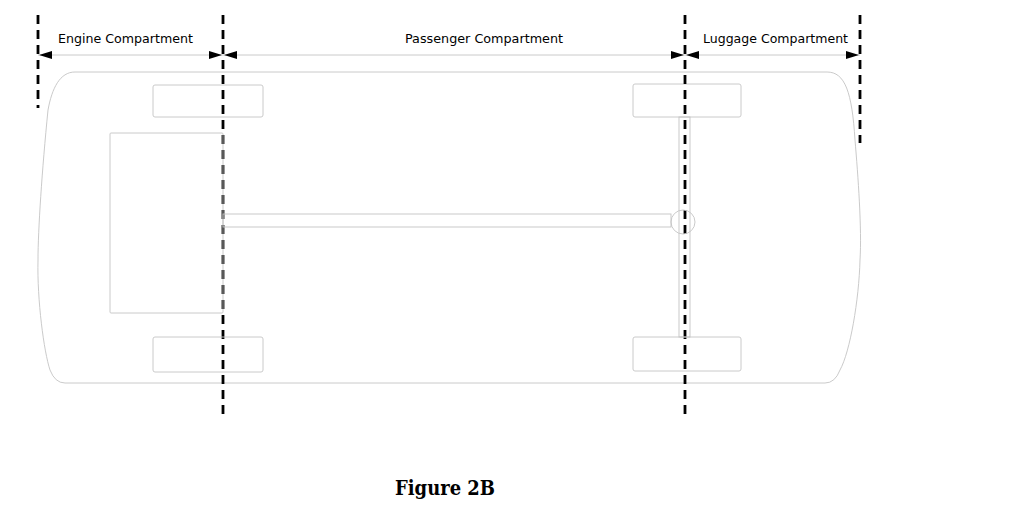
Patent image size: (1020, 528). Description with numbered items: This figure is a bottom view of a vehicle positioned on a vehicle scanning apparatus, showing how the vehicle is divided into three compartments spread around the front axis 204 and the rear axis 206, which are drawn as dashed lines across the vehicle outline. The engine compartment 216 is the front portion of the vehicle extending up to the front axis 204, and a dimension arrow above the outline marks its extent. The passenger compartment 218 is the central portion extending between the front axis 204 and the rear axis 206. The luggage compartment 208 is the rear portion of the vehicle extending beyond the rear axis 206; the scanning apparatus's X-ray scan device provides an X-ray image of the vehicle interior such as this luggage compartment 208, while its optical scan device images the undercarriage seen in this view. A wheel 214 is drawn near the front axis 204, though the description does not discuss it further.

The front axis 204 is at (224, 398).
The rear axis 206 is at (682, 393).
The luggage compartment 208 is at (765, 278).
The wheel 214 is at (195, 357).
The engine compartment 216 is at (88, 216).
The passenger compartment 218 is at (478, 296).